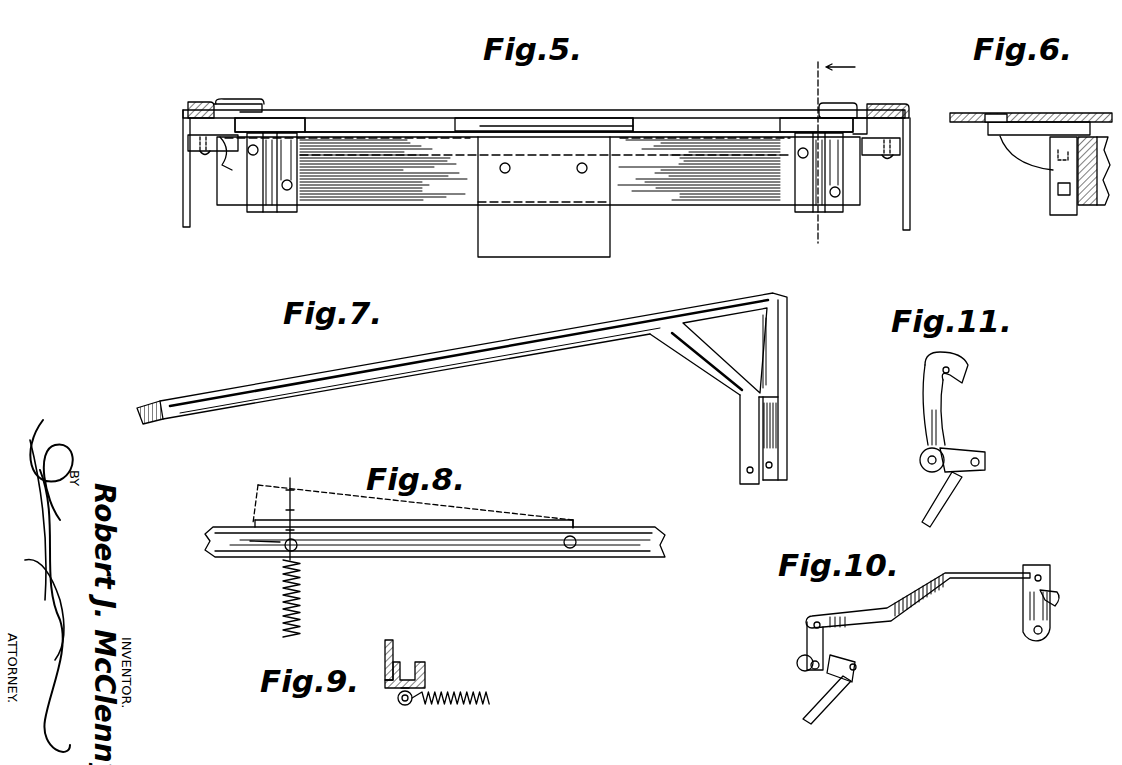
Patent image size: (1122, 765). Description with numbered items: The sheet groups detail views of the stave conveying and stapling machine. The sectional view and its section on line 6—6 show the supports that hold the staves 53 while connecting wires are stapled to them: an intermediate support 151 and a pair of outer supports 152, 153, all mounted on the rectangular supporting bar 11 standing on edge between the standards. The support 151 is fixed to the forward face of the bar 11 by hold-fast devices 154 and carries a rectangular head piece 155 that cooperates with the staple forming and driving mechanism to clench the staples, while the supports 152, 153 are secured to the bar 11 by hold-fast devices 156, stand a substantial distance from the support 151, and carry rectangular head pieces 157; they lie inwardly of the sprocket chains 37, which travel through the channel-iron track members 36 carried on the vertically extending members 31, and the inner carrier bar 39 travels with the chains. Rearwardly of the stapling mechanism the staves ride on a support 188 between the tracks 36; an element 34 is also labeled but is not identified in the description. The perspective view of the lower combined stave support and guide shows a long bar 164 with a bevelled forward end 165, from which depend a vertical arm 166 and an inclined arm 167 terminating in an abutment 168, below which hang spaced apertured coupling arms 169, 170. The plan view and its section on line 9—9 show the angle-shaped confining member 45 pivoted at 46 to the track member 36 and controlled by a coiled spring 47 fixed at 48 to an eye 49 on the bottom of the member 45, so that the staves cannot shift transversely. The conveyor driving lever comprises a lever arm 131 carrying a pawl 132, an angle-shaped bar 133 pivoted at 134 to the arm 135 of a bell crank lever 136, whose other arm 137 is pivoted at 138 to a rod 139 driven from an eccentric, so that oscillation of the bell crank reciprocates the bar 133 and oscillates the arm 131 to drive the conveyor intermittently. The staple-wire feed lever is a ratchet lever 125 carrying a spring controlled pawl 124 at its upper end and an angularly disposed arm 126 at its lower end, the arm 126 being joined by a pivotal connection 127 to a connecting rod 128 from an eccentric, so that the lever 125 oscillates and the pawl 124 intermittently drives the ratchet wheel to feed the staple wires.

In FIG. 5, the section line 6 is at (834, 151).
In FIG. 5, the supporting bar 11 is at (720, 190).
In FIG. 6, the supporting bar 11 is at (1090, 207).
In FIG. 5, the vertically extending member 31 is at (185, 181).
In FIG. 5, the clamp block 34 is at (195, 145).
In FIG. 5, the upper track member 36 is at (895, 130).
In FIG. 8, the upper track member 36 is at (628, 556).
In FIG. 9, the upper track member 36 is at (426, 668).
In FIG. 5, the sprocket chain 37 is at (190, 106).
In FIG. 5, the inner section bar 39 is at (238, 106).
In FIG. 6, the inner section bar 39 is at (992, 113).
In FIG. 5, the staves 53 is at (418, 106).
In FIG. 6, the staves 53 is at (958, 113).
In FIG. 5, the intermediate support 151 is at (600, 232).
In FIG. 5, the outer support 152 is at (800, 210).
In FIG. 6, the outer support 152 is at (1055, 171).
In FIG. 5, the outer support 153 is at (290, 213).
In FIG. 5, the hold-fast devices 154 is at (510, 169).
In FIG. 5, the rectangular head piece 155 is at (550, 126).
In FIG. 5, the hold-fast devices 156 is at (250, 151).
In FIG. 6, the hold-fast devices 156 is at (1062, 195).
In FIG. 5, the rectangular head piece 157 is at (308, 126).
In FIG. 5, the support 188 is at (248, 112).
In FIG. 7, the bar 164 is at (520, 352).
In FIG. 7, the bevelled forward end 165 is at (136, 406).
In FIG. 7, the vertical arm 166 is at (789, 350).
In FIG. 7, the inclined arm 167 is at (705, 368).
In FIG. 7, the abutment 168 is at (786, 400).
In FIG. 7, the coupling arm 169 is at (740, 456).
In FIG. 7, the coupling arm 170 is at (789, 440).
In FIG. 8, the section line 9 is at (315, 584).
In FIG. 8, the confining member 45 is at (500, 525).
In FIG. 9, the confining member 45 is at (394, 644).
In FIG. 8, the pivotal connection 46 is at (575, 537).
In FIG. 8, the coiled spring 47 is at (302, 608).
In FIG. 9, the coiled spring 47 is at (470, 706).
In FIG. 8, the fixed end 48 is at (299, 544).
In FIG. 9, the fixed end 48 is at (410, 705).
In FIG. 8, the eye 49 is at (251, 545).
In FIG. 9, the eye 49 is at (398, 705).
In FIG. 10, the lever arm 131 is at (1030, 615).
In FIG. 10, the pawl 132 is at (1050, 593).
In FIG. 10, the angle-shaped bar 133 is at (990, 577).
In FIG. 10, the pivotal connection 134 is at (823, 628).
In FIG. 10, the arm 135 is at (798, 660).
In FIG. 10, the bell crank lever 136 is at (812, 671).
In FIG. 10, the arm 137 is at (840, 658).
In FIG. 10, the pivotal connection 138 is at (857, 670).
In FIG. 10, the rod 139 is at (815, 715).
In FIG. 11, the spring controlled pawl 124 is at (964, 380).
In FIG. 11, the ratchet lever 125 is at (948, 425).
In FIG. 11, the angularly disposed arm 126 is at (958, 452).
In FIG. 11, the pivotal connection 127 is at (980, 464).
In FIG. 11, the connecting rod 128 is at (948, 500).